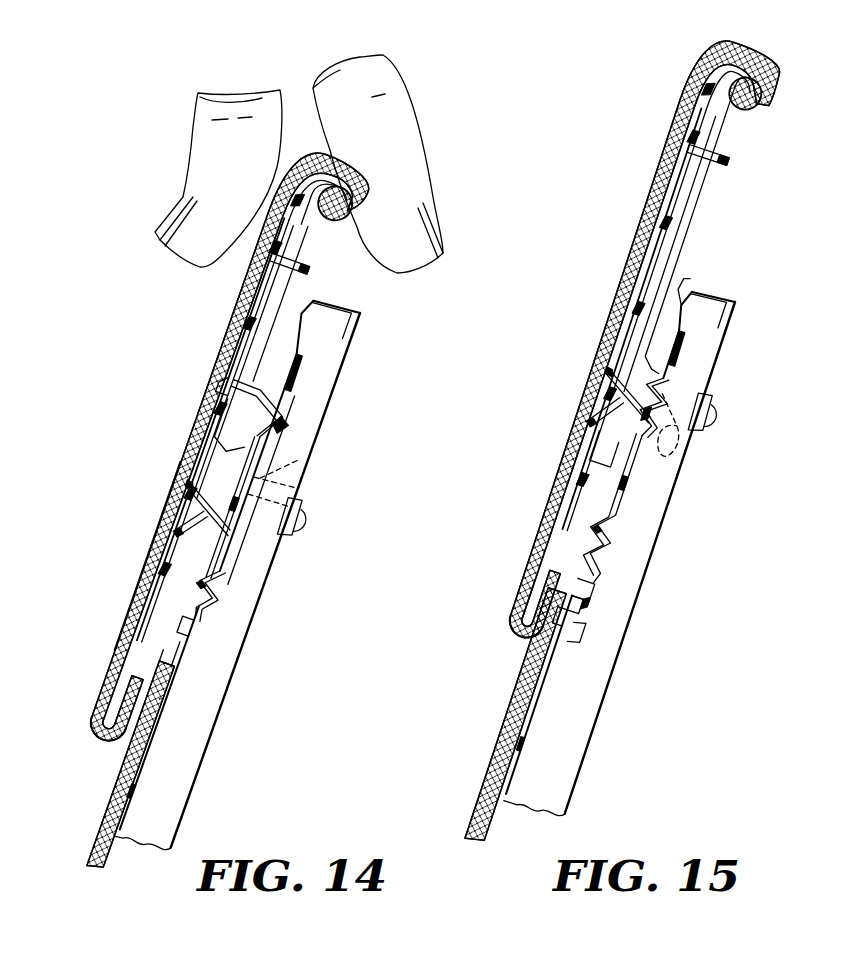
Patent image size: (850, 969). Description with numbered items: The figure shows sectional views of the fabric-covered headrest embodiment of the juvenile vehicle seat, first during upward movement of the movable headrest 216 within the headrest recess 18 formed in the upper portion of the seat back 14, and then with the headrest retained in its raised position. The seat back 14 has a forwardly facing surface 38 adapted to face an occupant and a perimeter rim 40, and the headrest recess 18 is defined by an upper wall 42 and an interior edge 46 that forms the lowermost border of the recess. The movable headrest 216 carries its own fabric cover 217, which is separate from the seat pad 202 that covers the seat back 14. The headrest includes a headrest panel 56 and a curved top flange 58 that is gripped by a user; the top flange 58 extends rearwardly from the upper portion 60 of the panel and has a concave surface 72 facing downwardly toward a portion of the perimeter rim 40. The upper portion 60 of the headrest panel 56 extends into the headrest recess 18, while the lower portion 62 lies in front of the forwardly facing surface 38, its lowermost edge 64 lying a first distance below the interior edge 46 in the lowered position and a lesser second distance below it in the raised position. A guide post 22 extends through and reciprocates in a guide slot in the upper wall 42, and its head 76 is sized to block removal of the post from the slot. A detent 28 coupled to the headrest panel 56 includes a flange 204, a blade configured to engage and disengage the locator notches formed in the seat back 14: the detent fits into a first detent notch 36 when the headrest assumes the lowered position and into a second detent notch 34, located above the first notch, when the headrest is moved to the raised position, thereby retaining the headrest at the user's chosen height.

In FIG. 14, the seat back 14 is at (192, 684).
In FIG. 14, the headrest recess 18 is at (322, 337).
In FIG. 15, the headrest recess 18 is at (648, 322).
In FIG. 14, the guide post 22 is at (300, 488).
In FIG. 15, the guide post 22 is at (672, 440).
In FIG. 14, the detent 28 is at (180, 519).
In FIG. 15, the detent 28 is at (600, 393).
In FIG. 14, the detent notch 34 is at (235, 407).
In FIG. 15, the detent notch 34 is at (657, 400).
In FIG. 14, the detent notch 36 is at (190, 556).
In FIG. 15, the detent notch 36 is at (598, 547).
In FIG. 14, the forwardly facing surface 38 is at (130, 797).
In FIG. 15, the forwardly facing surface 38 is at (560, 733).
In FIG. 14, the perimeter rim 40 is at (345, 311).
In FIG. 15, the perimeter rim 40 is at (712, 295).
In FIG. 14, the upper wall 42 is at (255, 453).
In FIG. 15, the upper wall 42 is at (620, 518).
In FIG. 15, the interior edge 46 is at (585, 610).
In FIG. 14, the headrest panel 56 is at (140, 583).
In FIG. 14, the top flange 58 is at (330, 158).
In FIG. 15, the top flange 58 is at (698, 65).
In FIG. 14, the upper portion 60 is at (283, 292).
In FIG. 15, the upper portion 60 is at (673, 182).
In FIG. 14, the lower portion 62 is at (185, 647).
In FIG. 15, the lower portion 62 is at (530, 604).
In FIG. 15, the lowermost edge 64 is at (520, 631).
In FIG. 14, the concave surface 72 is at (350, 178).
In FIG. 14, the head 76 is at (305, 527).
In FIG. 15, the head 76 is at (705, 427).
In FIG. 14, the seat pad 202 is at (96, 862).
In FIG. 15, the seat pad 202 is at (506, 746).
In FIG. 14, the flange 204 is at (280, 467).
In FIG. 14, the movable headrest 216 is at (273, 358).
In FIG. 14, the fabric cover 217 is at (130, 697).
In FIG. 15, the fabric cover 217 is at (777, 73).